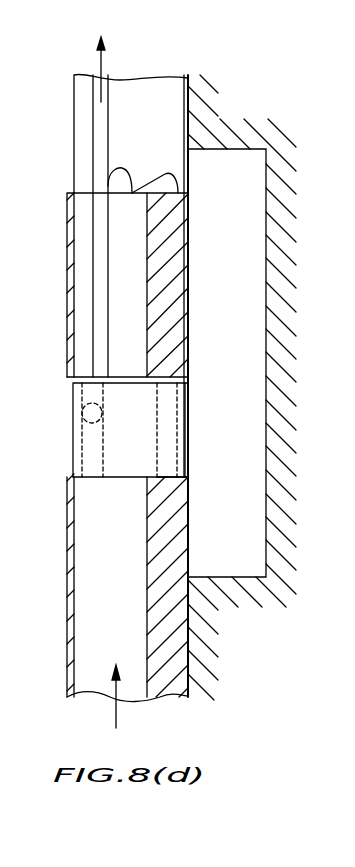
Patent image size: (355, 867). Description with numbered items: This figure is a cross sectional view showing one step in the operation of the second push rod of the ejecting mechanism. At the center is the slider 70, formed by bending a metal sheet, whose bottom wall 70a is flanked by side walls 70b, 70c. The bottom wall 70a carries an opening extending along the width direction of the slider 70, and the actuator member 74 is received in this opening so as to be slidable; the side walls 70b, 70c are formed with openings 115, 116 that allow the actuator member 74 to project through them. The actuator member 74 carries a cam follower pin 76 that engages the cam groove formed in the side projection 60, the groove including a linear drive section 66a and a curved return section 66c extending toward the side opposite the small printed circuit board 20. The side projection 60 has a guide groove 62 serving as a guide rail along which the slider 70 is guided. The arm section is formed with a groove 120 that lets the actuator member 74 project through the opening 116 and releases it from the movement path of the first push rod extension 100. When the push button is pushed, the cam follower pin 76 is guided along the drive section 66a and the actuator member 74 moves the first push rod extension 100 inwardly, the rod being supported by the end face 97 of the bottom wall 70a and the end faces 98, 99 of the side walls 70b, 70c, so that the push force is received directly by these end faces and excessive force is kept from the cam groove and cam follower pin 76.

The side projection 60 is at (82, 108).
The guide groove 62 is at (190, 90).
The first push rod extension 100 is at (100, 253).
The groove 120 is at (265, 268).
The small printed circuit board 20 is at (95, 285).
The actuator member 74 is at (128, 377).
The drive section 66a is at (68, 387).
The opening 115 is at (73, 397).
The opening 116 is at (190, 390).
The cam follower pin 76 is at (80, 418).
The end face 97 is at (128, 475).
The return section 66c is at (178, 422).
The end face 98 is at (73, 476).
The end face 99 is at (173, 472).
The side wall 70b is at (73, 527).
The bottom wall 70a is at (88, 580).
The side wall 70c is at (180, 543).
The slider 70 is at (60, 633).